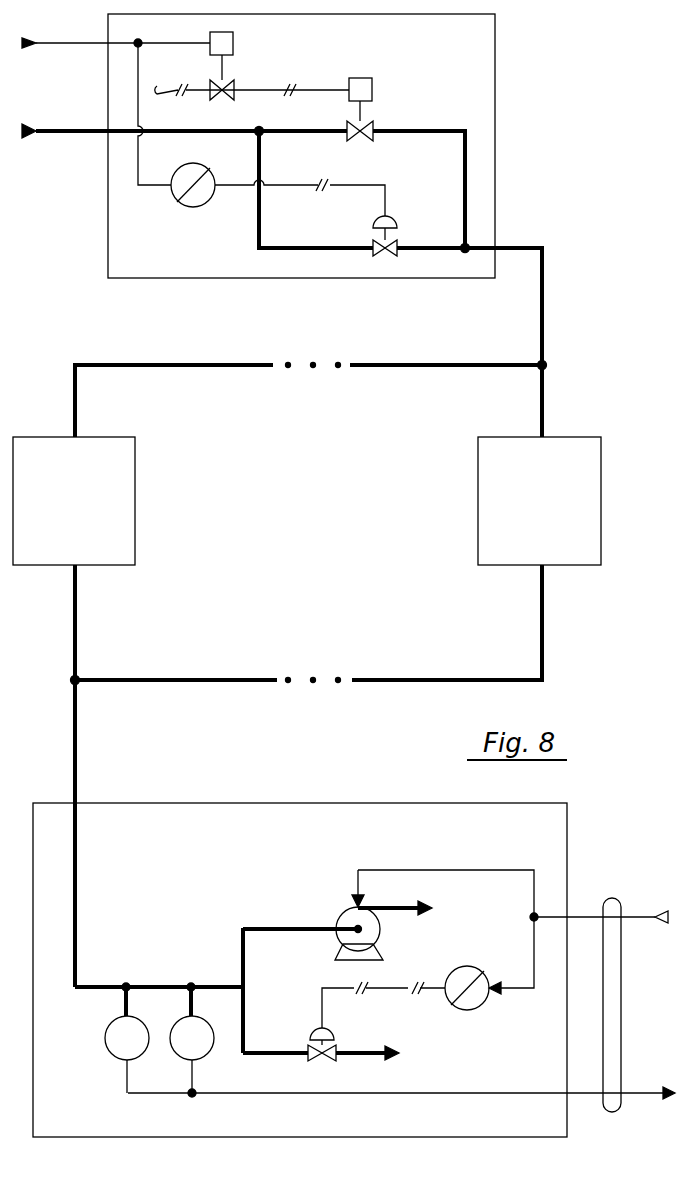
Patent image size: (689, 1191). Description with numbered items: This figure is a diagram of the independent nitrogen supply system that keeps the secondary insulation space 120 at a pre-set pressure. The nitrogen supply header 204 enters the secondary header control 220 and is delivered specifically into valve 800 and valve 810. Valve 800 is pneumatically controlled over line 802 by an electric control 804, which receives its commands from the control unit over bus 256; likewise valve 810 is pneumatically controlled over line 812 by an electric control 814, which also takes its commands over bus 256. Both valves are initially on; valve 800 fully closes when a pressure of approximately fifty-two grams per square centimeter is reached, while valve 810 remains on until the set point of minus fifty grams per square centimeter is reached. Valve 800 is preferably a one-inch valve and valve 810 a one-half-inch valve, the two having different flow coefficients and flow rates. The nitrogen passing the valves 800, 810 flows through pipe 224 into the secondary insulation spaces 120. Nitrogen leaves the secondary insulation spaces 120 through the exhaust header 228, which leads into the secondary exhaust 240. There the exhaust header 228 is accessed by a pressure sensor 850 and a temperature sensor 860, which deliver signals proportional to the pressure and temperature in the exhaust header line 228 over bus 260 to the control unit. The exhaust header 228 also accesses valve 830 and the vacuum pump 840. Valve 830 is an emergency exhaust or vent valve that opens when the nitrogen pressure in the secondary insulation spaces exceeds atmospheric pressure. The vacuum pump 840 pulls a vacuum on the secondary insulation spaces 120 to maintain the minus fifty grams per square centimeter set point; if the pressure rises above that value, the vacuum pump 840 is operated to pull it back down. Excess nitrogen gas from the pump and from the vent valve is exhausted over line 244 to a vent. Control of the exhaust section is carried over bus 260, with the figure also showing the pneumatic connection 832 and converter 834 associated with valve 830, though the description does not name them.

The secondary insulation space 120 is at (136, 504).
The nitrogen supply header 204 is at (80, 134).
The secondary header control 220 is at (437, 279).
The pipe 224 is at (545, 305).
The exhaust header 228 is at (545, 628).
The secondary exhaust 240 is at (412, 1138).
The line 244 is at (398, 912).
The bus 256 is at (80, 43).
The bus 260 is at (610, 898).
The valve 800 is at (397, 243).
The line 802 is at (291, 184).
The electric control 804 is at (202, 207).
The valve 810 is at (372, 93).
The line 812 is at (248, 90).
The electric control 814 is at (233, 52).
The valve 830 is at (303, 1042).
The pneumatic control line 832 is at (378, 992).
The current-to-pressure converter 834 is at (484, 1004).
The vacuum pump 840 is at (337, 915).
The pressure sensor 850 is at (106, 1046).
The temperature sensor 860 is at (212, 1048).